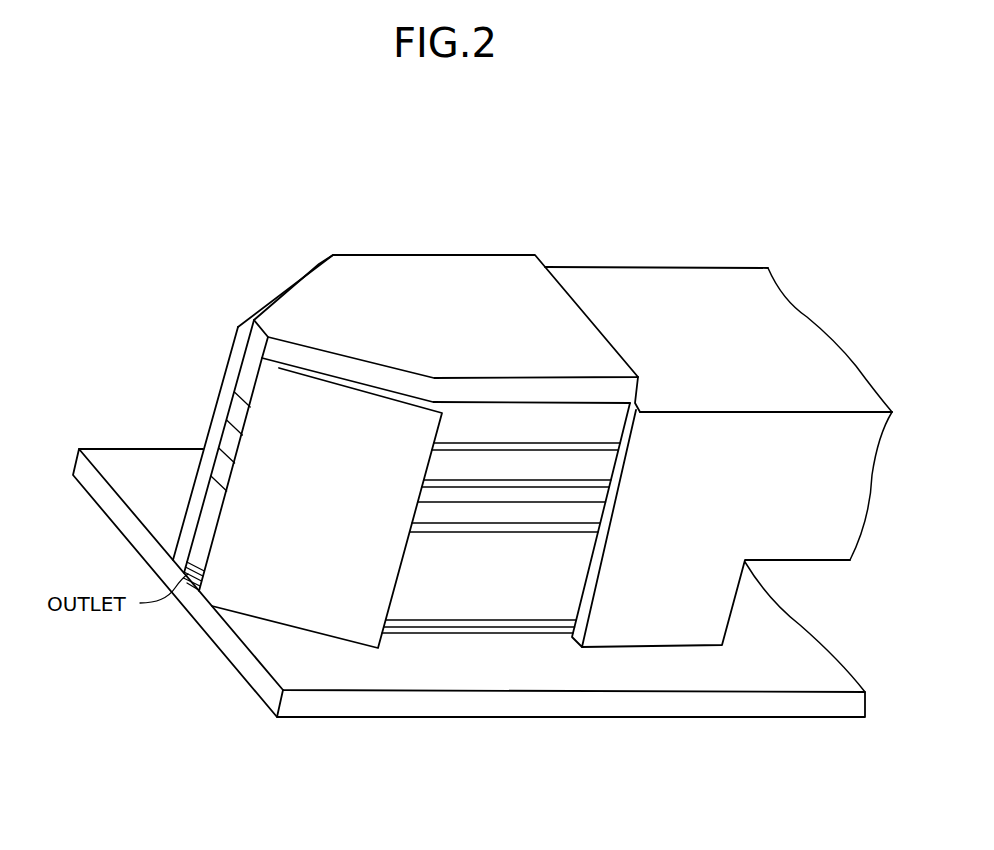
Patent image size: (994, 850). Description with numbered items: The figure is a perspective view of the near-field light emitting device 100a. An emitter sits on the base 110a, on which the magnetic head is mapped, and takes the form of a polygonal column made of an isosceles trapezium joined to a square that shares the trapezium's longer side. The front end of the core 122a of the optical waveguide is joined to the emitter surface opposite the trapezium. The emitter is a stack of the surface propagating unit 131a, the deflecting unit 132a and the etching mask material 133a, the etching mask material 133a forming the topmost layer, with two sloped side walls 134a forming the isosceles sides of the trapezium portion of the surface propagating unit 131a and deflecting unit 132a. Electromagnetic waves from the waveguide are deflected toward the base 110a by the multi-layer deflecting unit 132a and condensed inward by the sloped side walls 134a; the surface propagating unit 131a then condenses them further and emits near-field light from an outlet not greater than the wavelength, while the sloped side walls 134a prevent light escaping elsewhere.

The near-field light emitting device 100a is at (757, 187).
The base 110a is at (406, 705).
The core 122a is at (718, 278).
The surface propagating unit 131a is at (473, 620).
The deflecting unit 132a is at (500, 402).
The etching mask material 133a is at (458, 266).
The sloped side walls 134a is at (275, 453).